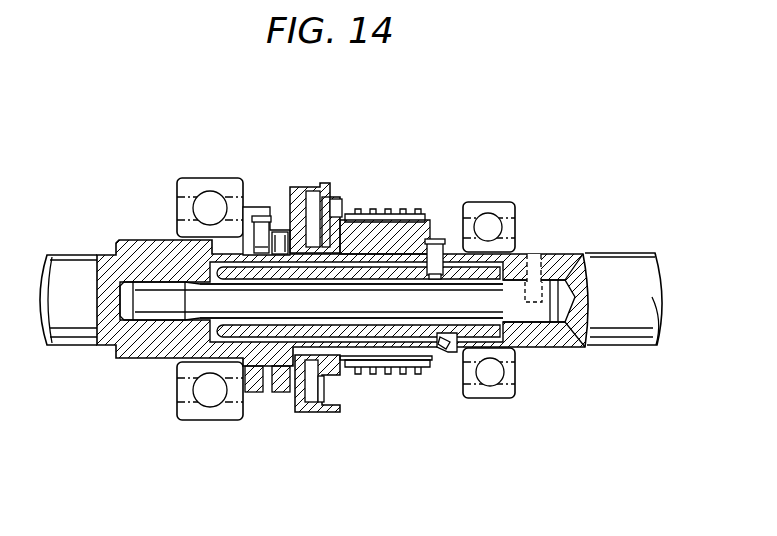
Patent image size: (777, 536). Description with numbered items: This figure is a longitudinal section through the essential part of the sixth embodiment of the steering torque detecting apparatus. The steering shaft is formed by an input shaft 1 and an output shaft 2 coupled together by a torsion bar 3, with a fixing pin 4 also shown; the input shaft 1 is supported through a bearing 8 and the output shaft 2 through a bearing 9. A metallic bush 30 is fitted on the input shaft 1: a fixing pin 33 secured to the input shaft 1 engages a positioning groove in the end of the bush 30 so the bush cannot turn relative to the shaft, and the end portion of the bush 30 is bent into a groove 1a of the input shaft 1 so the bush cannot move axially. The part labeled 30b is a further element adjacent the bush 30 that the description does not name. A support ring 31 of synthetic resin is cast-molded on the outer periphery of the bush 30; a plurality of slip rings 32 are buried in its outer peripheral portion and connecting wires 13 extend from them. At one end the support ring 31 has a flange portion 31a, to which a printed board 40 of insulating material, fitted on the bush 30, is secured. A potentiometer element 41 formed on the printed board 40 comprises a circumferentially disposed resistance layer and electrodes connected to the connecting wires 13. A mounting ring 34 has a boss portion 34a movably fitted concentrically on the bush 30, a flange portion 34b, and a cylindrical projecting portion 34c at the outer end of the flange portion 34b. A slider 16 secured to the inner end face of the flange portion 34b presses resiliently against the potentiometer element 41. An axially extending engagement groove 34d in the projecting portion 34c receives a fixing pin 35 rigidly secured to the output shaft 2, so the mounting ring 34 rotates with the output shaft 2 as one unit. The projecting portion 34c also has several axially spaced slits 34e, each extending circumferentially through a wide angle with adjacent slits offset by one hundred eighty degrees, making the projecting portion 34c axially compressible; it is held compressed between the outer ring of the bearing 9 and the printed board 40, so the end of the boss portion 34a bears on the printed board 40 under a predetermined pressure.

The input shaft 1 is at (592, 253).
The groove 1a is at (458, 352).
The output shaft 2 is at (68, 256).
The torsion bar 3 is at (492, 325).
The fixing pin 4 is at (532, 253).
The bearing 8 is at (516, 386).
The bearing 9 is at (192, 410).
The connecting wires 13 is at (343, 385).
The slider 16 is at (313, 385).
The metallic bush 30 is at (437, 350).
The bearing 30b is at (444, 250).
The support ring 31 is at (407, 372).
The flange portion 31a is at (343, 210).
The slip rings 32 is at (377, 380).
The fixing pin 33 is at (436, 240).
The mounting ring 34 is at (282, 174).
The boss portion 34a is at (318, 190).
The flange portion 34b is at (293, 192).
The cylindrical projecting portion 34c is at (274, 232).
The engagement groove 34d is at (256, 216).
The slits 34e is at (288, 205).
The fixing pin 35 is at (260, 240).
The printed board 40 is at (334, 196).
The potentiometer element 41 is at (316, 390).